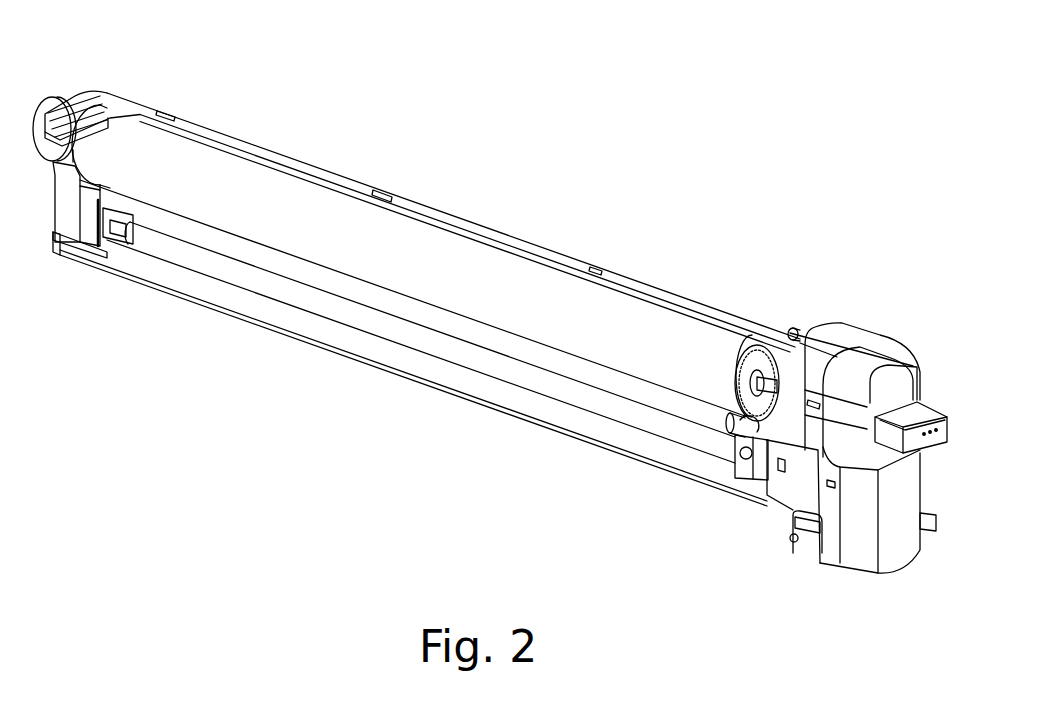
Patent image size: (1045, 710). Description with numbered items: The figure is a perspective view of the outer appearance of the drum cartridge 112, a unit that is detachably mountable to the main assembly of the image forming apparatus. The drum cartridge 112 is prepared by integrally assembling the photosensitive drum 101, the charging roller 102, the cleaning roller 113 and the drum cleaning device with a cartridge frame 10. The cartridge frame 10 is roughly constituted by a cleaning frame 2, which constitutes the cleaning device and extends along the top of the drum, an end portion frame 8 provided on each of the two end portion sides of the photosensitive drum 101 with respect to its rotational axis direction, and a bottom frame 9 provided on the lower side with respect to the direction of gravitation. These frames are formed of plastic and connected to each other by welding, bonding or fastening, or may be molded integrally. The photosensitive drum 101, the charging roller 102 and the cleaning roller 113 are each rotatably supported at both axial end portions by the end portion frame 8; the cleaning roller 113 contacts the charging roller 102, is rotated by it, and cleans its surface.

The cleaning frame 2 is at (308, 165).
The end portion frame 8 is at (106, 97).
The bottom frame 9 is at (658, 448).
The cartridge frame 10 is at (172, 110).
The photosensitive drum 101 is at (430, 234).
The charging roller 102 is at (270, 276).
The drum cartridge 112 is at (593, 152).
The cleaning roller 113 is at (485, 378).